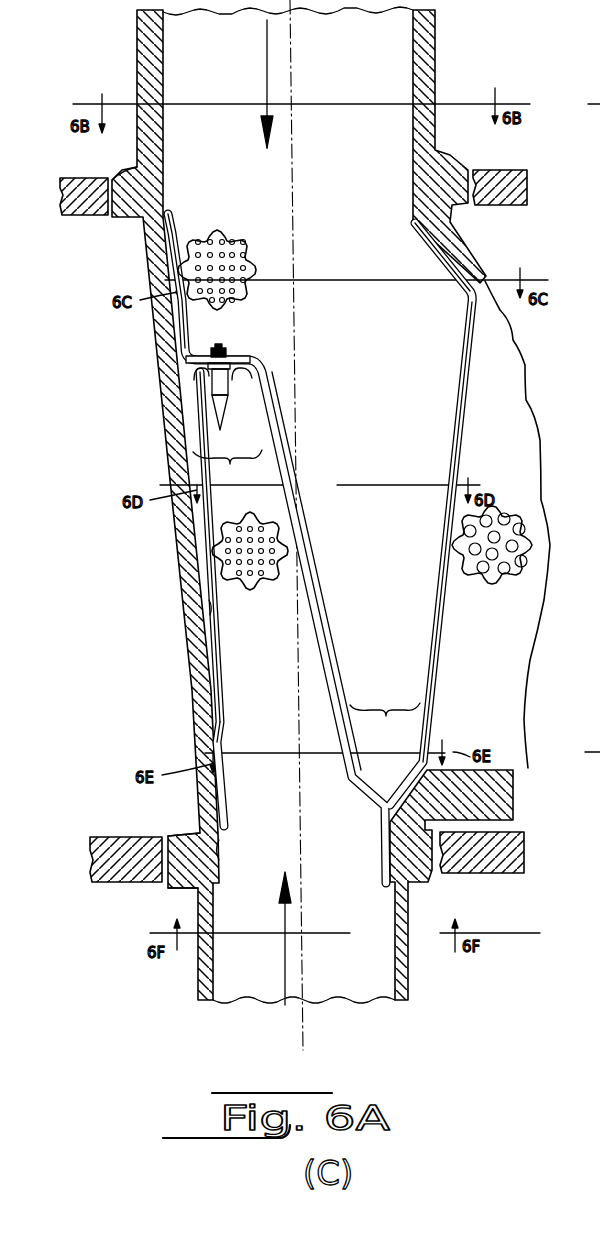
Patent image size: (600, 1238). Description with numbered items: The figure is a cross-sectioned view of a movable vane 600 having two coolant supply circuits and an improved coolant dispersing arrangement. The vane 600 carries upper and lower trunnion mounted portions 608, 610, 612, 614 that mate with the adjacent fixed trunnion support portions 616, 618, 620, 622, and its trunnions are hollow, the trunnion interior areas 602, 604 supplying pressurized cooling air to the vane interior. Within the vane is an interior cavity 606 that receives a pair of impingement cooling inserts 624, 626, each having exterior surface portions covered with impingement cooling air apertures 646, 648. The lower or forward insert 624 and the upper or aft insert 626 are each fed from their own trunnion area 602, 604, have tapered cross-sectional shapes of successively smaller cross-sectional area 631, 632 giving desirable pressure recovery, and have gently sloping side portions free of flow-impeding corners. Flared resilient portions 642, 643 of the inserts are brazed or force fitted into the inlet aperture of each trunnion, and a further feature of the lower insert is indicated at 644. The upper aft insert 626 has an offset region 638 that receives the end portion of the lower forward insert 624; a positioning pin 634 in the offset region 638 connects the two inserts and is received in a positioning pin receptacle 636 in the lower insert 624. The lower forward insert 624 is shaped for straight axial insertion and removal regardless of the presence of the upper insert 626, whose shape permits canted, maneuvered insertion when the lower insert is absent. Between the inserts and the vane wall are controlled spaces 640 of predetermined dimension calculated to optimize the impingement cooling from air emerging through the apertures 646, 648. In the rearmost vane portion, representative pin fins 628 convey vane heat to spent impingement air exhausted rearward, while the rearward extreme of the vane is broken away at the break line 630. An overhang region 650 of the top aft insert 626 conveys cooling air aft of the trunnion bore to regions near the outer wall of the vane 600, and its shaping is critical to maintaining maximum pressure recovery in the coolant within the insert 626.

The movable vane 600 is at (167, 440).
The hollow trunnion interior area 602 is at (362, 62).
The hollow trunnion interior area 604 is at (365, 978).
The interior cavity 606 is at (420, 237).
The trunnion mounted portion 608 is at (128, 180).
The trunnion mounted portion 610 is at (458, 185).
The trunnion mounted portion 612 is at (433, 863).
The trunnion mounted portion 614 is at (180, 833).
The fixed trunnion support portion 616 is at (74, 218).
The fixed trunnion support portion 618 is at (500, 170).
The fixed trunnion support portion 620 is at (480, 877).
The fixed trunnion support portion 622 is at (128, 884).
The impingement cooling insert 624 is at (203, 537).
The impingement cooling insert 626 is at (437, 660).
The pin fins 628 is at (462, 548).
The break line 630 is at (526, 367).
The tapered cross-sectional shape 631 is at (385, 722).
The tapered cross-sectional shape 632 is at (227, 467).
The positioning pin 634 is at (222, 350).
The positioning pin receptacle 636 is at (230, 377).
The offset region 638 is at (245, 362).
The controlled spaces 640 is at (210, 607).
The flared resilient portion 642 is at (172, 220).
The flared resilient portion 643 is at (220, 850).
The liner bend 644 is at (224, 733).
The impingement cooling air apertures 646 is at (283, 527).
The impingement cooling air apertures 648 is at (256, 252).
The overhang region 650 is at (437, 272).